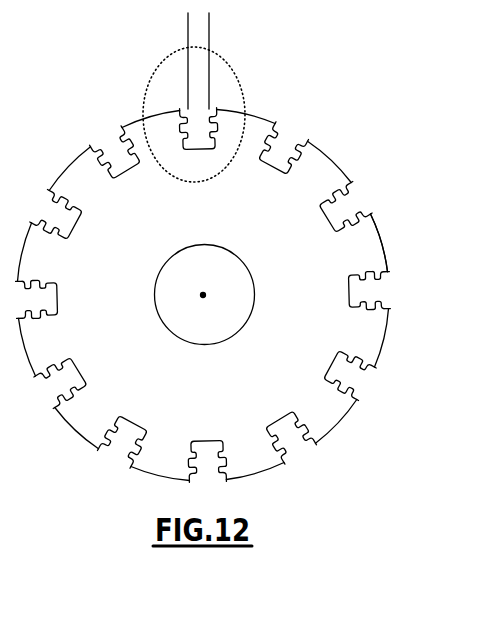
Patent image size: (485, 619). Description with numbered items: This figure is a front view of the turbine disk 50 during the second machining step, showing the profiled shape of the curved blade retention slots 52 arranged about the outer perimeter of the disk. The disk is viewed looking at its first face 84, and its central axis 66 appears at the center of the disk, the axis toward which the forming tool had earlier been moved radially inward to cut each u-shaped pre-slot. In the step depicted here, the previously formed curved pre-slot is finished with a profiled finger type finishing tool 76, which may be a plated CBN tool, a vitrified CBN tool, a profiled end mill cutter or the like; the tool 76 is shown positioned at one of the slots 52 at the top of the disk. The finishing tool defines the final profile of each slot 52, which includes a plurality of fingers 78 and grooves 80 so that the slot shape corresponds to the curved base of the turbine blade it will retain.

The turbine disk 50 is at (232, 186).
The curved blade retention slot 52 is at (349, 203).
The central axis 66 is at (203, 295).
The profiled finger type finishing tool 76 is at (212, 47).
The finger 78 is at (320, 427).
The groove 80 is at (370, 357).
The first face 84 is at (358, 252).